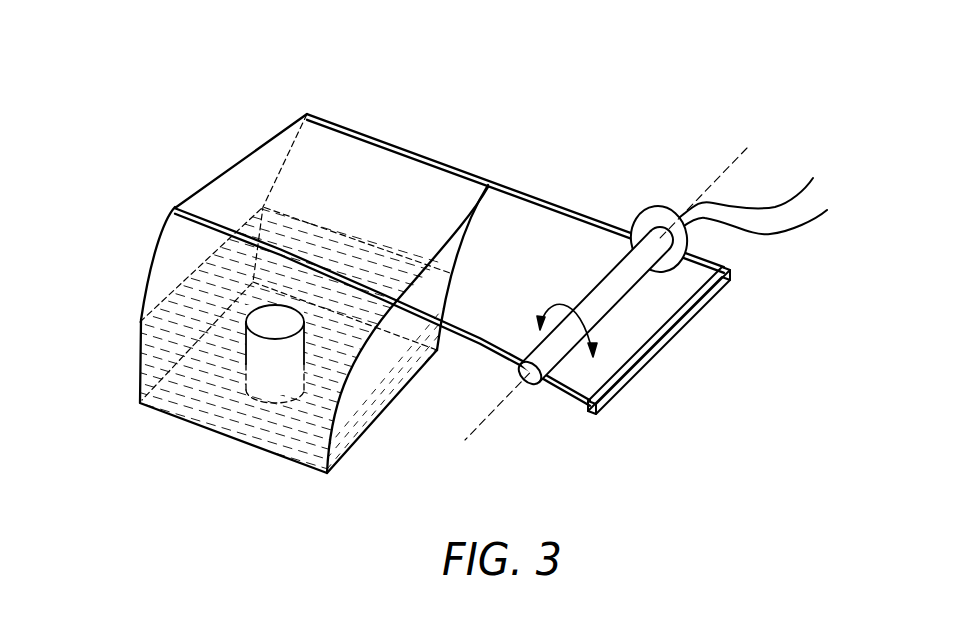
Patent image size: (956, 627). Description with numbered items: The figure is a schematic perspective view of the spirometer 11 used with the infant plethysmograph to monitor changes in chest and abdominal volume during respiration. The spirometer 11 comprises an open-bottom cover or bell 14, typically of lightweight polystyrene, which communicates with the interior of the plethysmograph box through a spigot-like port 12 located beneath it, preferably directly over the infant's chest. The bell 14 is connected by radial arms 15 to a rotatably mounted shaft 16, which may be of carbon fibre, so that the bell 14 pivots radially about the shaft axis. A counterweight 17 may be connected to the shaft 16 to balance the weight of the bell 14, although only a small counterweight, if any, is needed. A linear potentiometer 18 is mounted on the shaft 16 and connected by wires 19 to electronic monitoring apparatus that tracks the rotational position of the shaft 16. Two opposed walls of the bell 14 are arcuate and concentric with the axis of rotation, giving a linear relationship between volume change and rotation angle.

The spirometer 11 is at (467, 132).
The spigot-like port 12 is at (267, 348).
The bell 14 is at (145, 288).
The radial arms 15 is at (538, 198).
The rotatably mounted shaft 16 is at (602, 280).
The counterweight 17 is at (698, 302).
The linear potentiometer 18 is at (647, 207).
The wires 19 is at (790, 200).